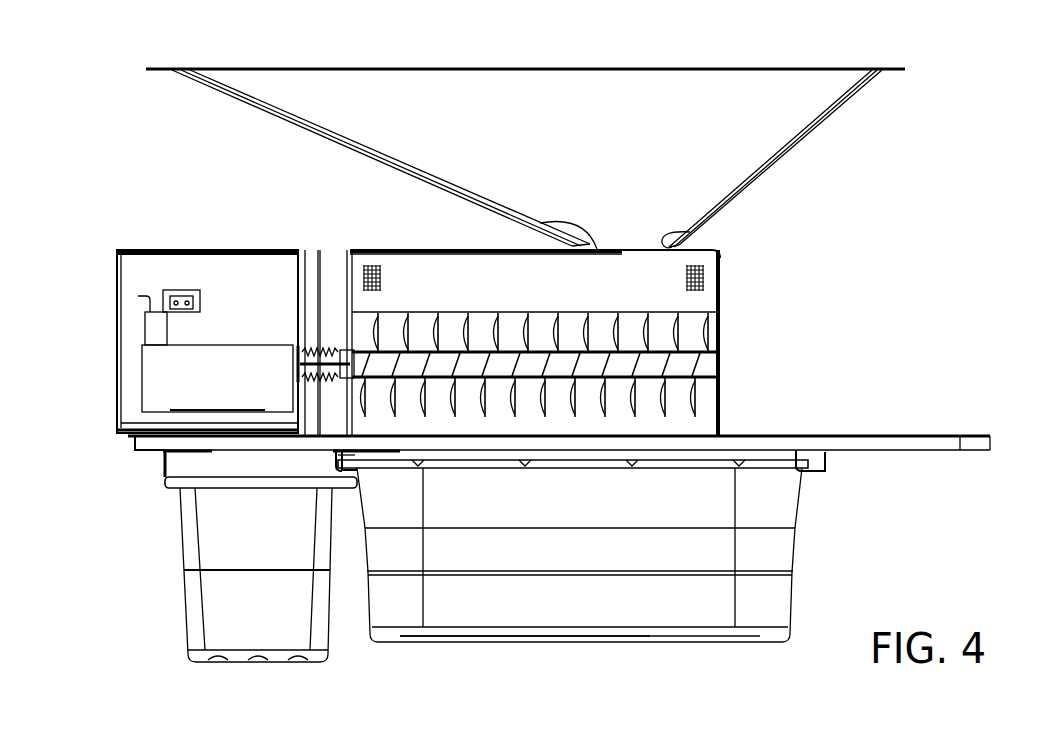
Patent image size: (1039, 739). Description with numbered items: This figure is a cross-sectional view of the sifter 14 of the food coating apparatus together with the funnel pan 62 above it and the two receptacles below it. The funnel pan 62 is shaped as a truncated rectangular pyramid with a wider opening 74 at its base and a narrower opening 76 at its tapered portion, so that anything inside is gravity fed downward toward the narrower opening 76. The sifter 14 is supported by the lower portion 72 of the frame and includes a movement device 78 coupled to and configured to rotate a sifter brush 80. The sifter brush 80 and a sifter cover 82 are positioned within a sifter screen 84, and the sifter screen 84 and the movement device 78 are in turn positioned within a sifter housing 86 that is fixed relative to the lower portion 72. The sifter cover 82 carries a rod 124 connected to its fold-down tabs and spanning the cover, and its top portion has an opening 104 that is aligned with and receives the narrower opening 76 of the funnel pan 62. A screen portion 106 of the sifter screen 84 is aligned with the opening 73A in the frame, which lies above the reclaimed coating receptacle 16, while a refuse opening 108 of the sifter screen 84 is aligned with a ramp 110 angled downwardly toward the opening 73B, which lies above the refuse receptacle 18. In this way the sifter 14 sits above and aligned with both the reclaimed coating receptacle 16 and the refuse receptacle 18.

The sifter 14 is at (858, 292).
The reclaimed coating receptacle 16 is at (655, 605).
The refuse receptacle 18 is at (235, 603).
The funnel pan 62 is at (753, 139).
The lower portion 72 is at (133, 438).
The opening 73A is at (700, 433).
The opening 73B is at (195, 437).
The wider opening 74 is at (780, 68).
The narrower opening 76 is at (707, 222).
The movement device 78 is at (205, 368).
The sifter brush 80 is at (685, 341).
The sifter cover 82 is at (705, 251).
The sifter screen 84 is at (722, 406).
The sifter housing 86 is at (282, 250).
The opening 104 is at (539, 223).
The screen portion 106 is at (655, 410).
The refuse opening 108 is at (350, 398).
The ramp 110 is at (357, 420).
The rod 124 is at (697, 315).